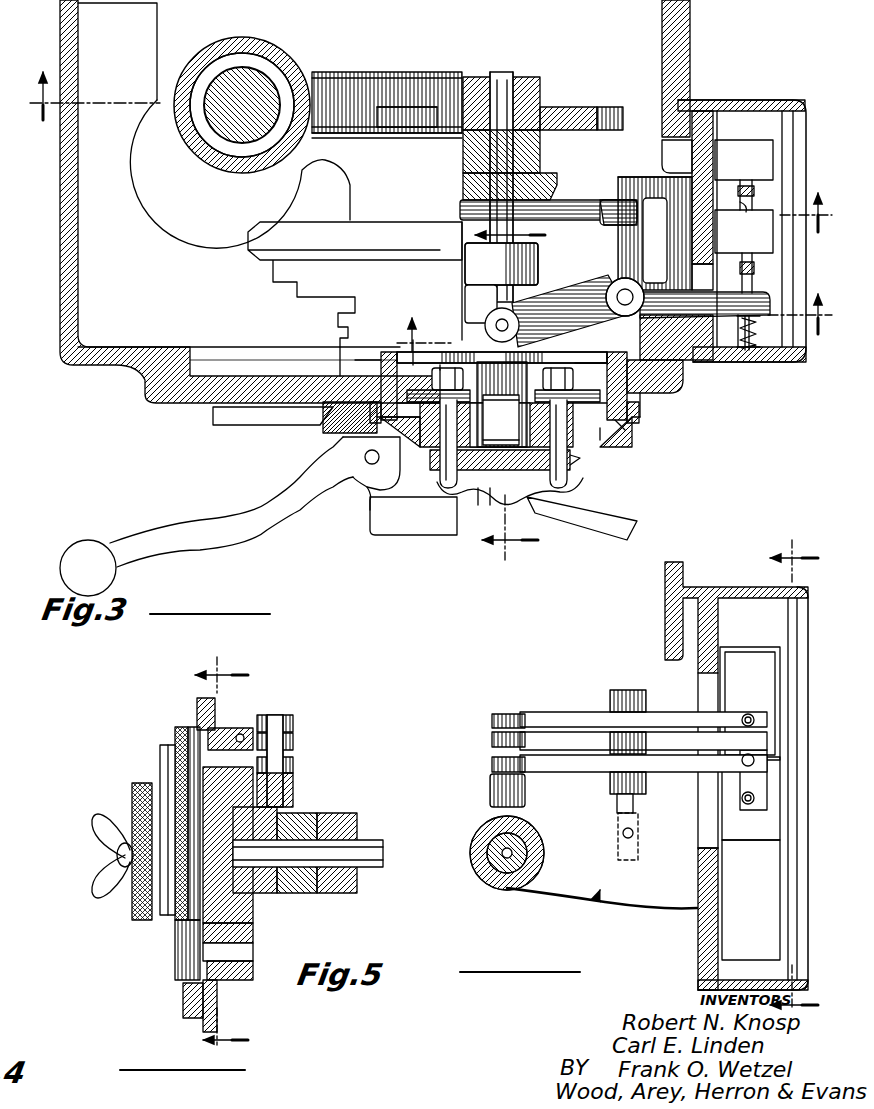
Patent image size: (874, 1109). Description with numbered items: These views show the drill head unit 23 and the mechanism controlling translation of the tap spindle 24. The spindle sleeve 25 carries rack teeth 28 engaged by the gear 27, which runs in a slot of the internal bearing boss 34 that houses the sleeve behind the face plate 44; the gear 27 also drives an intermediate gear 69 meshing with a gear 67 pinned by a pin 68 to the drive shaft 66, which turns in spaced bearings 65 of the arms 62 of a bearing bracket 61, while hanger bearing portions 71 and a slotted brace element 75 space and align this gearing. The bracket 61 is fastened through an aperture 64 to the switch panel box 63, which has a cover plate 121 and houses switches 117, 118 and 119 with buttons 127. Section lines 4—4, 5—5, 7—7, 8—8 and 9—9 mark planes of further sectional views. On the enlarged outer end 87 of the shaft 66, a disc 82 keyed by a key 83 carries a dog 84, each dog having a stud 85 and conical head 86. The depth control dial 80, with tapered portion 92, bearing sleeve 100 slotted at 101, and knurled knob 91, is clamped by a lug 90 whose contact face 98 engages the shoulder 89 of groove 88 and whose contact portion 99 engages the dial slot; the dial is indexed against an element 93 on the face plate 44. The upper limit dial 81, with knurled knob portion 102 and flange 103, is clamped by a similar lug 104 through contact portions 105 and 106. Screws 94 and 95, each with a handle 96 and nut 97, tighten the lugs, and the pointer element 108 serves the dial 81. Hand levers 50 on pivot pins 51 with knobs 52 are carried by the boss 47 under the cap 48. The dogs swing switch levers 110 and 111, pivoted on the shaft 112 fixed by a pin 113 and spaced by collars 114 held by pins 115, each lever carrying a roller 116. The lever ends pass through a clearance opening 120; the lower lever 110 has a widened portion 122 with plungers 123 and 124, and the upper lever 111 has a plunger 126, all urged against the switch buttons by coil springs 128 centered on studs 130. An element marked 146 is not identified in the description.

In FIG. 3, the drill head unit 23 is at (120, 265).
In FIG. 3, the drill or tap spindle 24 is at (250, 65).
In FIG. 3, the drill spindle sleeve 25 is at (284, 55).
In FIG. 3, the rack teeth 28 is at (306, 62).
In FIG. 3, the gear 27 is at (325, 74).
In FIG. 3, the intermediate gear 69 is at (390, 128).
In FIG. 3, the internal bearing boss 34 is at (305, 172).
In FIG. 3, the face plate 44 is at (213, 408).
In FIG. 4, the face plate 44 is at (197, 706).
In FIG. 3, the drive shaft 66 is at (500, 80).
In FIG. 4, the drive shaft 66 is at (375, 843).
In FIG. 5, the drive shaft 66 is at (480, 882).
In FIG. 3, the pin 68 is at (538, 82).
In FIG. 3, the gear 67 is at (560, 108).
In FIG. 3, the bearing portions 71 is at (541, 152).
In FIG. 4, the bearing portions 71 is at (340, 822).
In FIG. 3, the bearings 65 is at (462, 186).
In FIG. 4, the bearings 65 is at (300, 818).
In FIG. 3, the bracket arms 62 is at (592, 186).
In FIG. 5, the bracket arms 62 is at (630, 893).
In FIG. 3, the bearing bracket 61 is at (616, 180).
In FIG. 5, the bearing bracket 61 is at (592, 895).
In FIG. 3, the aperture 64 is at (680, 160).
In FIG. 3, the switch panel box 63 is at (756, 104).
In FIG. 5, the switch panel box 63 is at (734, 588).
In FIG. 3, the cover plate 121 is at (806, 108).
In FIG. 5, the cover plate 121 is at (790, 935).
In FIG. 3, the switch 118 is at (741, 146).
In FIG. 5, the switch 118 is at (775, 767).
In FIG. 3, the switch buttons 127 is at (755, 215).
In FIG. 3, the switch 117 is at (762, 242).
In FIG. 5, the switch 117 is at (749, 652).
In FIG. 3, the section line 9— 9 is at (431, 165).
In FIG. 3, the section line 5— 5 is at (614, 336).
In FIG. 3, the section line 4— 4 is at (518, 399).
In FIG. 5, the section line 7— 7 is at (794, 774).
In FIG. 4, the section line 8— 8 is at (226, 849).
In FIG. 3, the plunger 126 is at (757, 316).
In FIG. 5, the plunger 126 is at (758, 712).
In FIG. 3, the brace element 75 is at (587, 215).
In FIG. 3, the roller 116 is at (503, 300).
In FIG. 4, the roller 116 is at (293, 775).
In FIG. 5, the roller 116 is at (492, 738).
In FIG. 3, the dog 84 is at (468, 306).
In FIG. 4, the dog 84 is at (293, 787).
In FIG. 3, the limit control disc 82 is at (508, 312).
In FIG. 4, the limit control disc 82 is at (253, 918).
In FIG. 5, the limit control disc 82 is at (500, 888).
In FIG. 3, the upper switch control lever 111 is at (572, 283).
In FIG. 4, the upper switch control lever 111 is at (291, 718).
In FIG. 5, the upper switch control lever 111 is at (582, 719).
In FIG. 3, the collars 114 is at (636, 283).
In FIG. 5, the collars 114 is at (647, 700).
In FIG. 3, the shaft 112 is at (625, 292).
In FIG. 5, the shaft 112 is at (635, 802).
In FIG. 3, the annular groove 88 is at (567, 356).
In FIG. 4, the annular groove 88 is at (172, 925).
In FIG. 3, the nut 97 is at (442, 366).
In FIG. 3, the bearing sleeve portion 100 is at (612, 358).
In FIG. 4, the bearing sleeve portion 100 is at (250, 945).
In FIG. 3, the slot 101 is at (414, 338).
In FIG. 3, the clamping lug 104 is at (388, 356).
In FIG. 3, the contact portion 106 is at (368, 373).
In FIG. 3, the contact portion 105 is at (503, 384).
In FIG. 3, the clamping lug element 90 is at (600, 387).
In FIG. 3, the shoulder 89 is at (500, 404).
In FIG. 3, the contact face 98 is at (510, 408).
In FIG. 3, the index element 93 is at (325, 430).
In FIG. 3, the annular flange 103 is at (398, 424).
In FIG. 3, the screw 95 is at (440, 456).
In FIG. 3, the pivot pins 51 is at (348, 462).
In FIG. 3, the hand levers 50 is at (214, 525).
In FIG. 3, the manipulating knobs 52 is at (89, 552).
In FIG. 3, the forward boss 47 is at (372, 492).
In FIG. 3, the cap member 48 is at (392, 530).
In FIG. 3, the enlarged shaft end 87 is at (488, 476).
In FIG. 4, the enlarged shaft end 87 is at (250, 935).
In FIG. 3, the operating handle 96 is at (478, 500).
In FIG. 4, the operating handle 96 is at (108, 862).
In FIG. 3, the knurled knob element 91 is at (568, 470).
In FIG. 4, the knurled knob element 91 is at (132, 796).
In FIG. 3, the screw 94 is at (580, 460).
In FIG. 3, the depth control dial 80 is at (585, 440).
In FIG. 4, the depth control dial 80 is at (165, 768).
In FIG. 3, the tapered portion 92 is at (605, 428).
In FIG. 3, the contact portion 99 is at (620, 427).
In FIG. 3, the knurled knob portion 102 is at (642, 420).
In FIG. 4, the knurled knob portion 102 is at (188, 747).
In FIG. 3, the upper limit control dial 81 is at (641, 405).
In FIG. 4, the upper limit control dial 81 is at (175, 735).
In FIG. 3, the coil springs 128 is at (750, 348).
In FIG. 3, the studs 130 is at (742, 348).
In FIG. 3, the clearance opening 120 is at (732, 345).
In FIG. 5, the clearance opening 120 is at (697, 850).
In FIG. 4, the conical head 86 is at (252, 728).
In FIG. 4, the stud 85 is at (240, 734).
In FIG. 4, the nut 146 is at (293, 741).
In FIG. 4, the lower switch control lever 110 is at (293, 762).
In FIG. 5, the lower switch control lever 110 is at (585, 767).
In FIG. 4, the key 83 is at (270, 818).
In FIG. 5, the key 83 is at (520, 851).
In FIG. 4, the upper limit reverse pointer element 108 is at (183, 1003).
In FIG. 5, the pins 115 is at (618, 745).
In FIG. 5, the plunger 123 is at (748, 716).
In FIG. 5, the plunger 124 is at (742, 802).
In FIG. 5, the widened end portion 122 is at (757, 858).
In FIG. 5, the switch 119 is at (760, 862).
In FIG. 5, the pin 113 is at (634, 833).